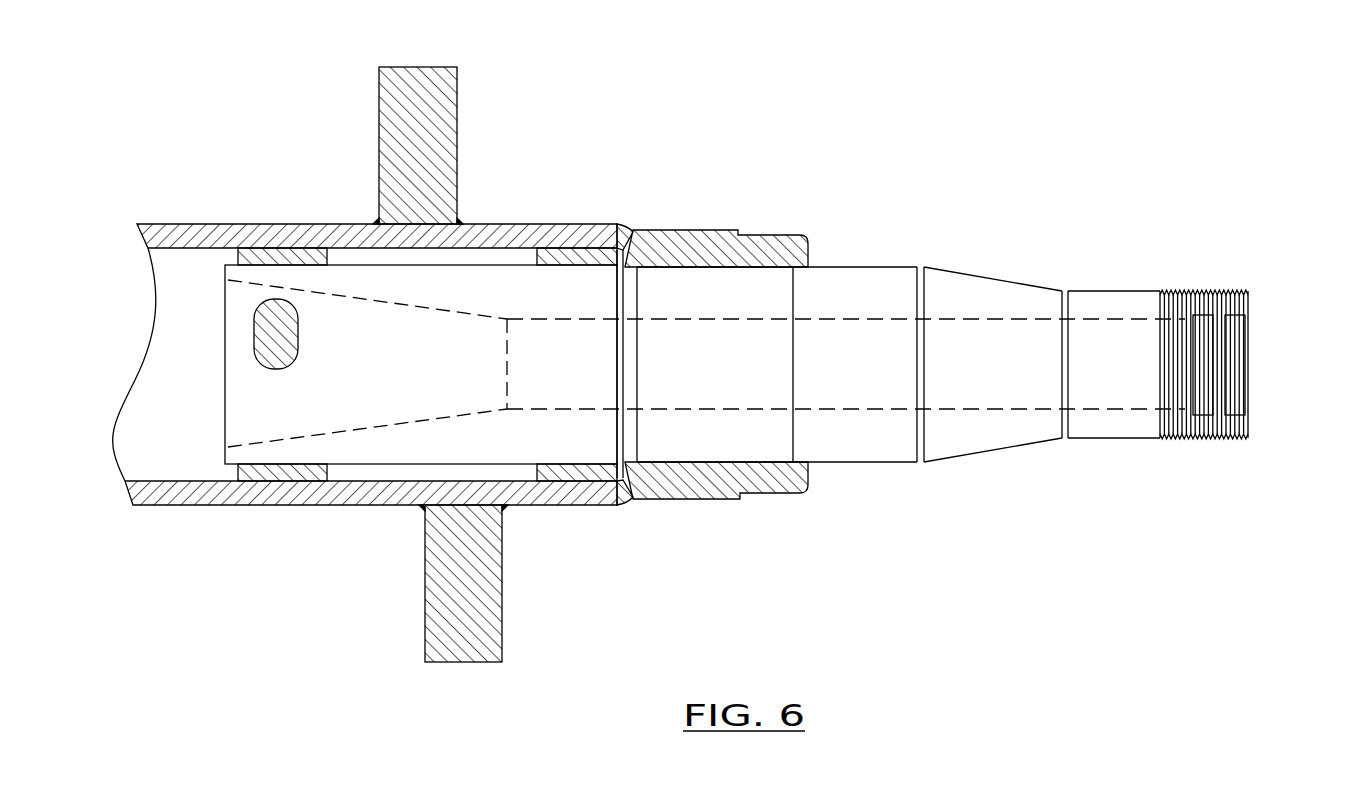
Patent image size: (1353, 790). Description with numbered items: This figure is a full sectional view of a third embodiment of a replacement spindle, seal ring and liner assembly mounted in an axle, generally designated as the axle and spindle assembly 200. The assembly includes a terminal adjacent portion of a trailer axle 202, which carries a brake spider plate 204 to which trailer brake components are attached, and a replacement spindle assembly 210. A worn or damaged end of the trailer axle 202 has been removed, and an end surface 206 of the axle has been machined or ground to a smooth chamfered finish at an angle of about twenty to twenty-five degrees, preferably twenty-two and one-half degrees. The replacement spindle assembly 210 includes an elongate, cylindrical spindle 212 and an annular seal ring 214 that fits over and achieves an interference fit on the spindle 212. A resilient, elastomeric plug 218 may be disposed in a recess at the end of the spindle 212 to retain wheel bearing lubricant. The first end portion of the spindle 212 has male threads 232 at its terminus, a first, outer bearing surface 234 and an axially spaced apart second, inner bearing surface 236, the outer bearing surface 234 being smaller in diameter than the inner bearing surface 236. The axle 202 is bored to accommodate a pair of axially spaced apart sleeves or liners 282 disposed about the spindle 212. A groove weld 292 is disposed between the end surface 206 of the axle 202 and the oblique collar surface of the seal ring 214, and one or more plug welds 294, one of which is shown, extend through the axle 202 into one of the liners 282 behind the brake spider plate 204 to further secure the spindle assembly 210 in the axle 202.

The axle and spindle assembly 200 is at (934, 121).
The trailer axle 202 is at (218, 234).
The brake spider plate 204 is at (413, 90).
The end surface 206 is at (626, 232).
The replacement spindle assembly 210 is at (836, 247).
The spindle 212 is at (1099, 266).
The annular seal ring 214 is at (770, 230).
The elastomeric plug 218 is at (1238, 371).
The male threads 232 is at (1215, 441).
The outer bearing surface 234 is at (1108, 440).
The inner bearing surface 236 is at (880, 462).
The liners 282 is at (270, 482).
The groove weld 292 is at (627, 494).
The plug weld 294 is at (275, 338).